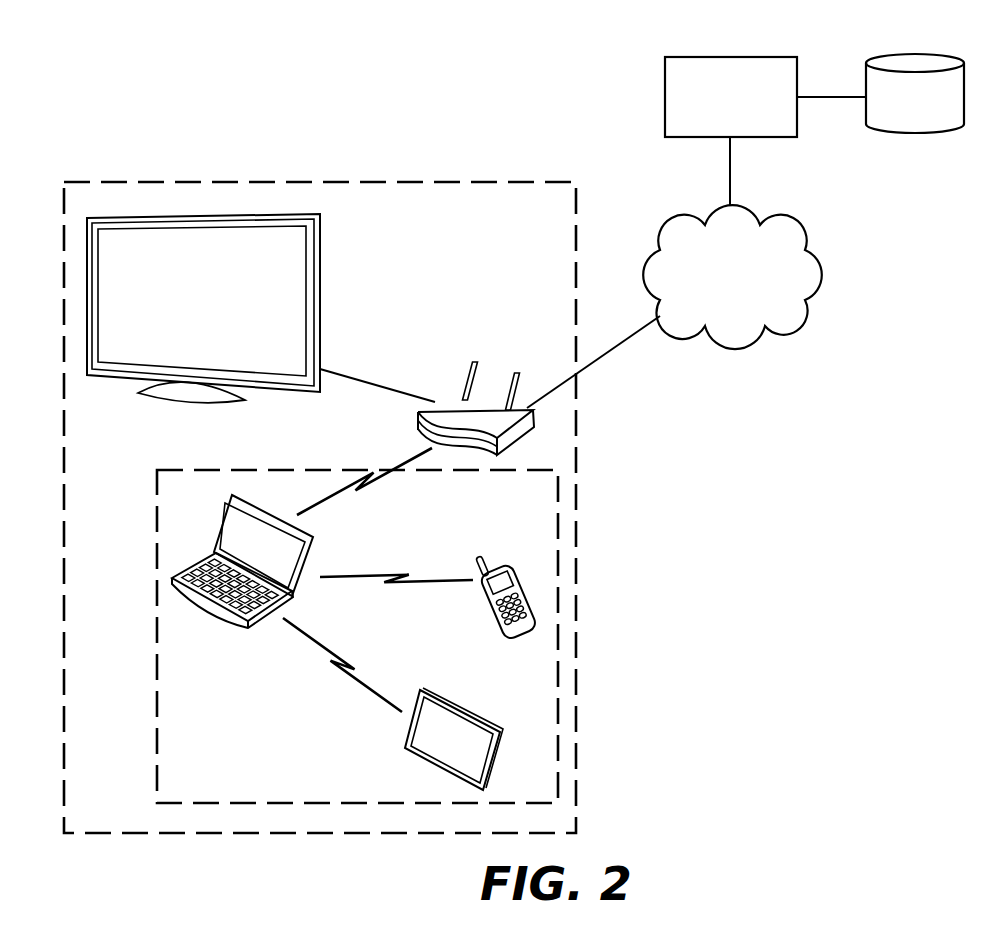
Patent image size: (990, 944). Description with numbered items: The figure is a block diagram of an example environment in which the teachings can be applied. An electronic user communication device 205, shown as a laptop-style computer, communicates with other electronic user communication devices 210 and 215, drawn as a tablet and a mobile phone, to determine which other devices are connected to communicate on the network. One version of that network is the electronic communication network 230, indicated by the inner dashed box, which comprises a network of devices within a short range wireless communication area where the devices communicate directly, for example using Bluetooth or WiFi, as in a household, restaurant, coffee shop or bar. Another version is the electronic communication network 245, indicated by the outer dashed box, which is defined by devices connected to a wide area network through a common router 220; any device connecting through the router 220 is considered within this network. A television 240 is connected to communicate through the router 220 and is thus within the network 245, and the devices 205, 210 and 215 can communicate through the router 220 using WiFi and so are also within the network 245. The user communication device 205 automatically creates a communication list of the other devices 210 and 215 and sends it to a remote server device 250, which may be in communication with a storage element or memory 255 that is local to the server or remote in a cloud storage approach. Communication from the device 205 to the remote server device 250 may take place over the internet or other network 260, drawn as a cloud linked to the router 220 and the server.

The electronic user communication device 205 is at (315, 551).
The other electronic user communication device 210 is at (407, 735).
The other electronic user communication device 215 is at (487, 612).
The router 220 is at (455, 398).
The electronic communication network 230 is at (197, 470).
The television 240 is at (320, 254).
The electronic communication network 245 is at (102, 181).
The remote server device 250 is at (690, 57).
The storage element or memory 255 is at (915, 55).
The network 260 is at (732, 277).